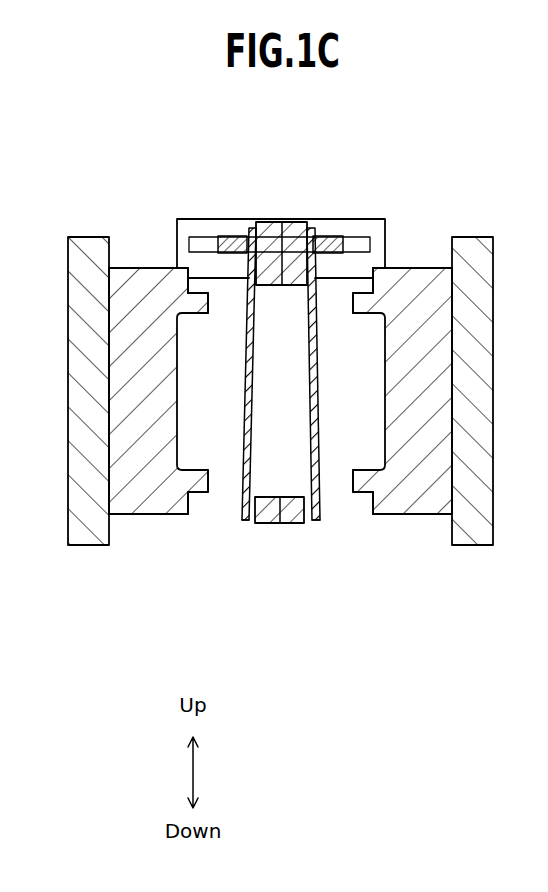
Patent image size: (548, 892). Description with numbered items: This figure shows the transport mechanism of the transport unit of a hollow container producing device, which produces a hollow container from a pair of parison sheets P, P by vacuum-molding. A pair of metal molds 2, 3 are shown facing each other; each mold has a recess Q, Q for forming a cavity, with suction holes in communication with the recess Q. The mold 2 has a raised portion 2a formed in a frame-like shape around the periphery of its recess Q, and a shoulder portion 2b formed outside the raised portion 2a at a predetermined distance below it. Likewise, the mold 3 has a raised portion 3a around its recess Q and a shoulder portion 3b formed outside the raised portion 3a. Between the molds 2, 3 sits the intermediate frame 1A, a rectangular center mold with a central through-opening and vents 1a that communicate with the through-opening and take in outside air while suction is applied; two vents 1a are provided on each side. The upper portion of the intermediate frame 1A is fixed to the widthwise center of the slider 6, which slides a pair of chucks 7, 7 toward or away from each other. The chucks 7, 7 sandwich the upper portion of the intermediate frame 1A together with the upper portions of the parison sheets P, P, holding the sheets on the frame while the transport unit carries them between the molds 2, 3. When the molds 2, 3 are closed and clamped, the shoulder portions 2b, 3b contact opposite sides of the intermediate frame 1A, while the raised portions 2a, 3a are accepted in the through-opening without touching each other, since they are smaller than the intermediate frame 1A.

The intermediate frame 1A is at (263, 523).
The vent 1a is at (283, 223).
The mold 2 is at (130, 398).
The raised portion 2a is at (212, 302).
The shoulder portion 2b is at (190, 283).
The mold 3 is at (430, 398).
The raised portion 3a is at (357, 297).
The shoulder portion 3b is at (372, 280).
The slider 6 is at (381, 219).
The chuck 7 is at (242, 236).
The parison sheet P is at (245, 523).
The recess Q is at (177, 353).